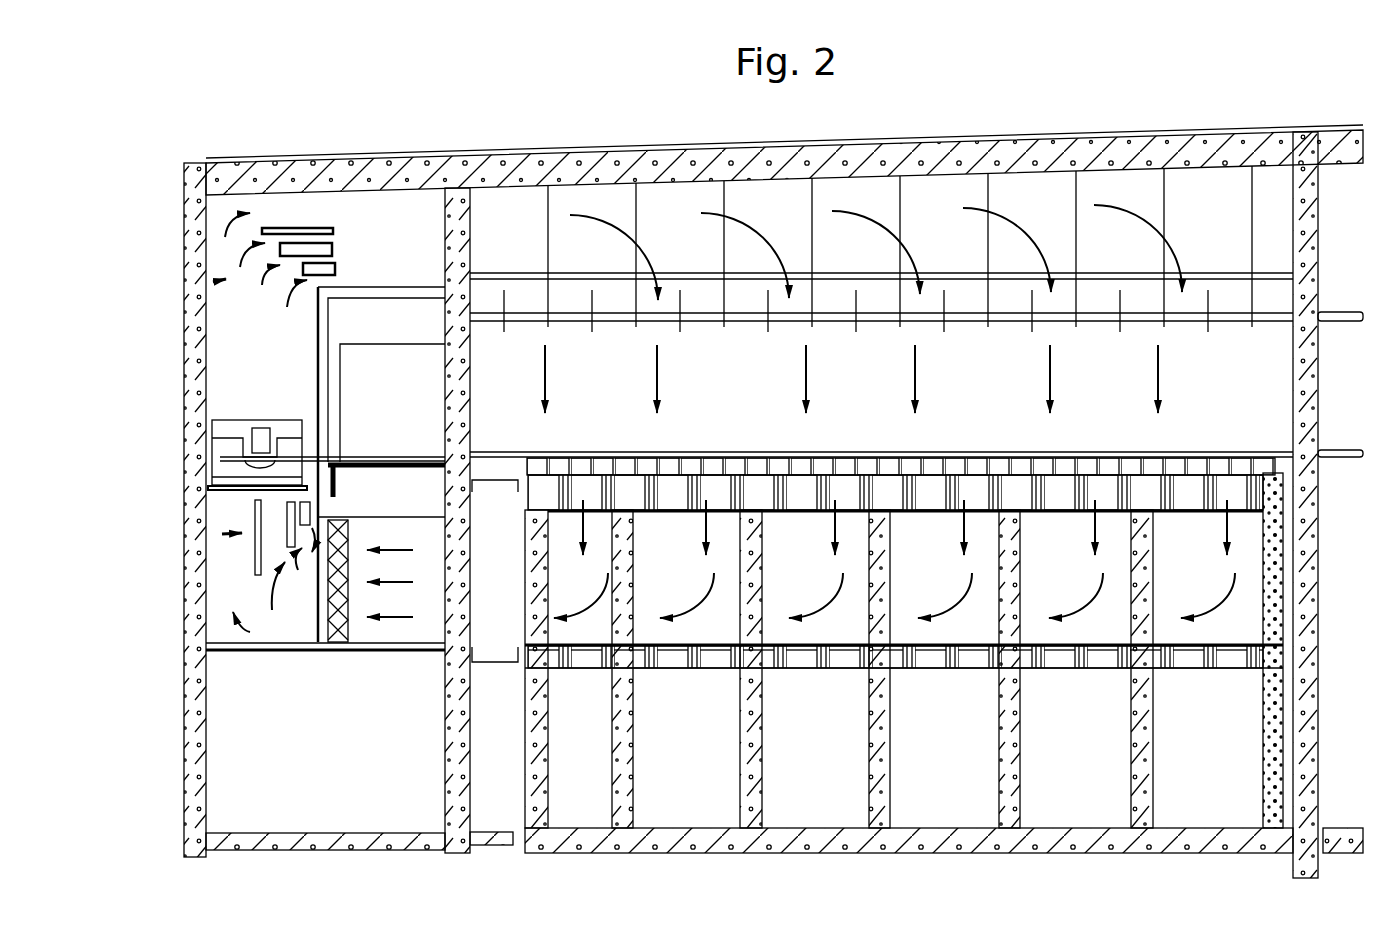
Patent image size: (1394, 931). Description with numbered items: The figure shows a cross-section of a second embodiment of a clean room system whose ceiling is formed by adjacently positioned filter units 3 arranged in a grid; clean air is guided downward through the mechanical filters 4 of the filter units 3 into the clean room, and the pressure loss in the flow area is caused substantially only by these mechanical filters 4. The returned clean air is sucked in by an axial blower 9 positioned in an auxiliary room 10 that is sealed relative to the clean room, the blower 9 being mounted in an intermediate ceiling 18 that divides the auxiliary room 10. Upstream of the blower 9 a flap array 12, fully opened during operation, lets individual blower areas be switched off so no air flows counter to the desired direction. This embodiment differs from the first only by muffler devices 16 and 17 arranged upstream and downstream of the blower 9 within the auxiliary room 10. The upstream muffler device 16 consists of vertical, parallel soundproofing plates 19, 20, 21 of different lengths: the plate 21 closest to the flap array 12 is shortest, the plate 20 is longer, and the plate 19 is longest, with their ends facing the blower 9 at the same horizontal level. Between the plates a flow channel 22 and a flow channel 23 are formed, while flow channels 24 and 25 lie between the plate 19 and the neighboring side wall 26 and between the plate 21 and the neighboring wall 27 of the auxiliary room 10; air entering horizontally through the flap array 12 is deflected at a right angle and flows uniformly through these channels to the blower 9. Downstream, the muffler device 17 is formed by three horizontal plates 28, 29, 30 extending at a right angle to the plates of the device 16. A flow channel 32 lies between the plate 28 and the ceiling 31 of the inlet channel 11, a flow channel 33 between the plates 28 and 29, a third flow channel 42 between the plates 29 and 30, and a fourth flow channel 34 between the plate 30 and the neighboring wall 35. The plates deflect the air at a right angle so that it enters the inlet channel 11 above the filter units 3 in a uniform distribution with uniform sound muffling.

The filter units 3 is at (748, 293).
The mechanical filters 4 is at (742, 325).
The axial blower 9 is at (207, 427).
The auxiliary room 10 is at (240, 348).
The inlet channel 11 is at (565, 255).
The flap array 12 is at (340, 632).
The muffler device 16 is at (245, 533).
The muffler device 17 is at (207, 282).
The intermediate ceiling 18 is at (207, 466).
The plate 19 is at (258, 545).
The plate 20 is at (300, 540).
The plate 21 is at (318, 545).
The flow channel 22 is at (290, 540).
The flow channel 23 is at (290, 509).
The flow channel 24 is at (280, 537).
The flow channel 25 is at (336, 520).
The side wall 26 is at (283, 254).
The wall 27 is at (332, 462).
The plate 28 is at (262, 232).
The plate 29 is at (310, 247).
The plate 30 is at (338, 262).
The ceiling 31 is at (413, 178).
The flow channel 32 is at (292, 220).
The flow channel 33 is at (262, 232).
The flow channel 34 is at (333, 280).
The wall 35 is at (437, 293).
The flow channel 42 is at (300, 270).